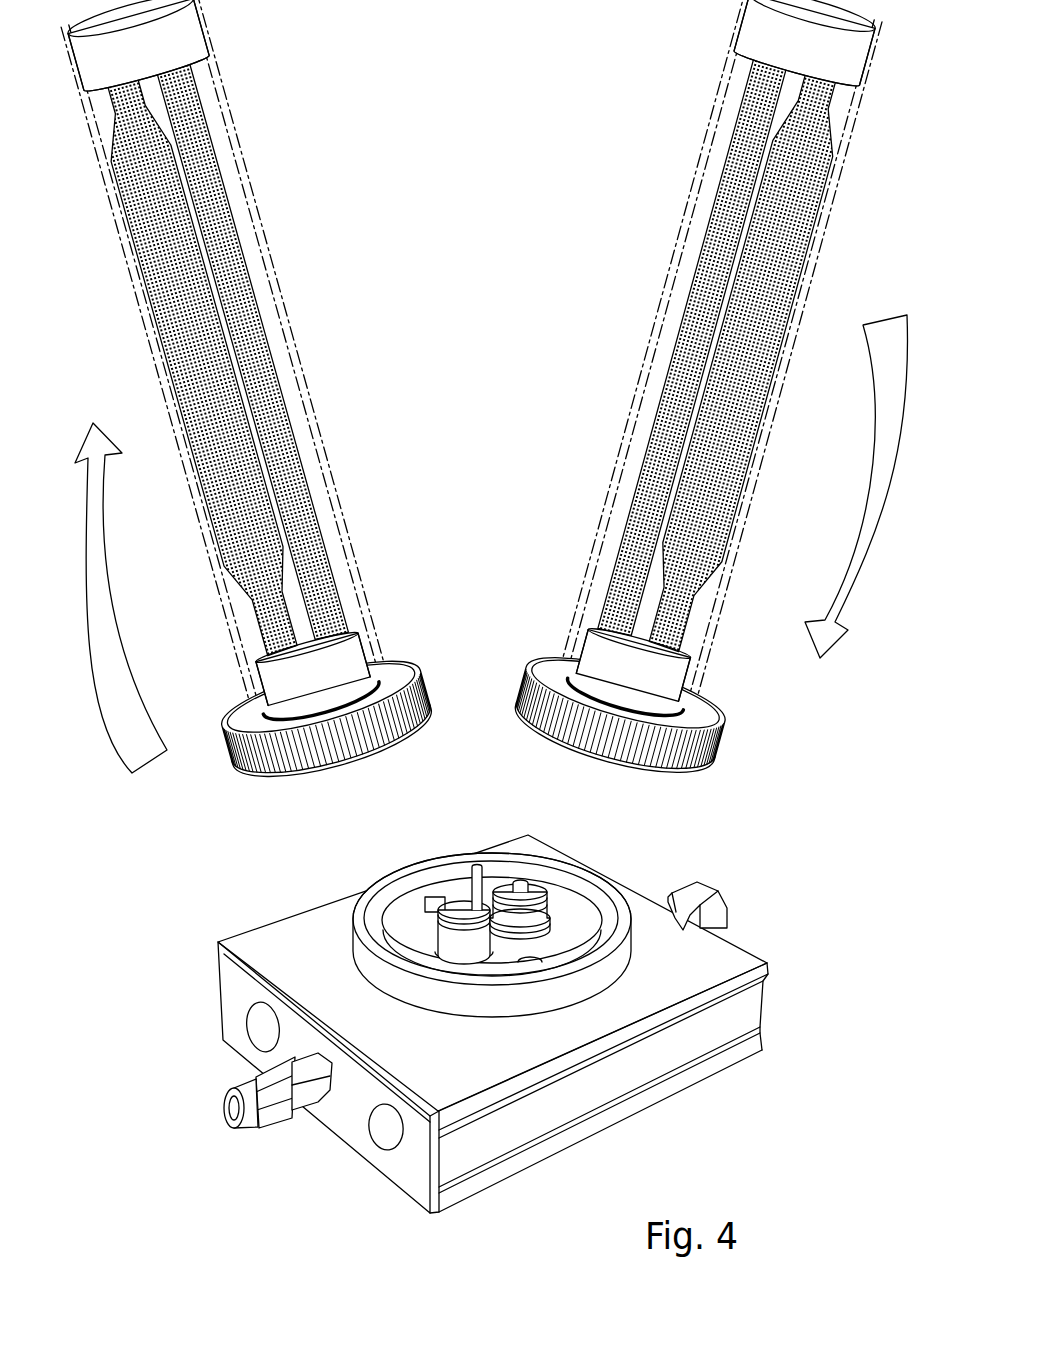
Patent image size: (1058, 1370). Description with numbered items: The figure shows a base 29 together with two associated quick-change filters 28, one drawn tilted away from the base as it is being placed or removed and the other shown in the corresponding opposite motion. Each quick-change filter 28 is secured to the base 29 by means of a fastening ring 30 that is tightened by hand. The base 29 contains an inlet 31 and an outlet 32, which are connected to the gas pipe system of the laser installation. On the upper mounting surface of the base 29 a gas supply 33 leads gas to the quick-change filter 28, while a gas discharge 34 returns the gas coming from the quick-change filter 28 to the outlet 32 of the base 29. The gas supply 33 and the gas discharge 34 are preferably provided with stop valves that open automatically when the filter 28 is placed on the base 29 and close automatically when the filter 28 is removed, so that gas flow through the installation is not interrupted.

The quick-change filter 28 is at (230, 115).
The base 29 is at (484, 1008).
The fastening ring 30 is at (723, 738).
The inlet 31 is at (222, 1104).
The outlet 32 is at (708, 900).
The gas supply 33 is at (452, 940).
The gas discharge 34 is at (532, 910).